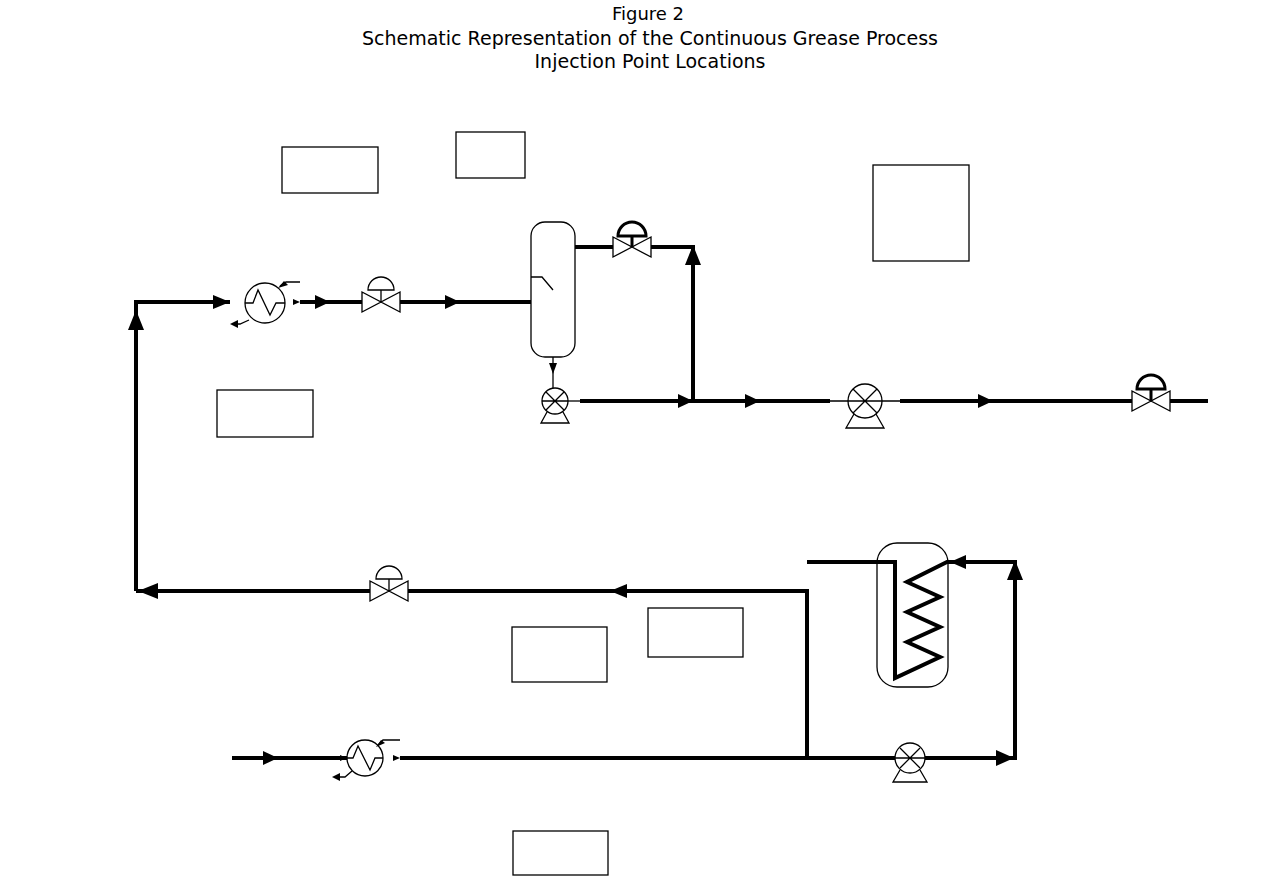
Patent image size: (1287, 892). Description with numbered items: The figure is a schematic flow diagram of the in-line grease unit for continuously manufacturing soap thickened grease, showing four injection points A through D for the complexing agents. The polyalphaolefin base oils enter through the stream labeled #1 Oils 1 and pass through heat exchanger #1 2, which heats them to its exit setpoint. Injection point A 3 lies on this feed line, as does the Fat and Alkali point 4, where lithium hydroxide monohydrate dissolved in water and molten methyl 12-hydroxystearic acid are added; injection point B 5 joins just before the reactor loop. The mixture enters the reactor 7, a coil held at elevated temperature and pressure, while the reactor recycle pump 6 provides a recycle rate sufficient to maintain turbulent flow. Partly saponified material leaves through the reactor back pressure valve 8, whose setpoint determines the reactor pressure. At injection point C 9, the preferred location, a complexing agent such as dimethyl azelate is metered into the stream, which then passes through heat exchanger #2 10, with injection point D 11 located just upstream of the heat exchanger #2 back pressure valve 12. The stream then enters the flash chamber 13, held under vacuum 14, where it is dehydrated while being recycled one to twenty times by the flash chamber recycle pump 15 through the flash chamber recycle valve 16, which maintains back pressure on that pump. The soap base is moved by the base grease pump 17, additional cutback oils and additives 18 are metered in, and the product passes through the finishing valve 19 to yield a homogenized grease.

The #1 Oils stream 1 is at (278, 746).
The heat exchanger #1 2 is at (366, 787).
The injection point A 3 is at (560, 768).
The Fat and Alkali injection point 4 is at (560, 748).
The injection point B 5 is at (795, 703).
The reactor recycle pump 6 is at (909, 768).
The reactor 7 is at (912, 624).
The reactor back pressure valve 8 is at (390, 598).
The injection point C 9 is at (148, 480).
The heat exchanger #2 10 is at (265, 328).
The injection point D 11 is at (330, 290).
The heat exchanger #2 back pressure valve 12 is at (380, 317).
The flash chamber 13 is at (548, 324).
The vacuum 14 is at (553, 222).
The flash chamber recycle pump 15 is at (557, 437).
The flash chamber recycle valve 16 is at (653, 231).
The base grease pump 17 is at (863, 412).
The cutback oils and additives 18 is at (923, 390).
The finishing valve 19 is at (1148, 398).